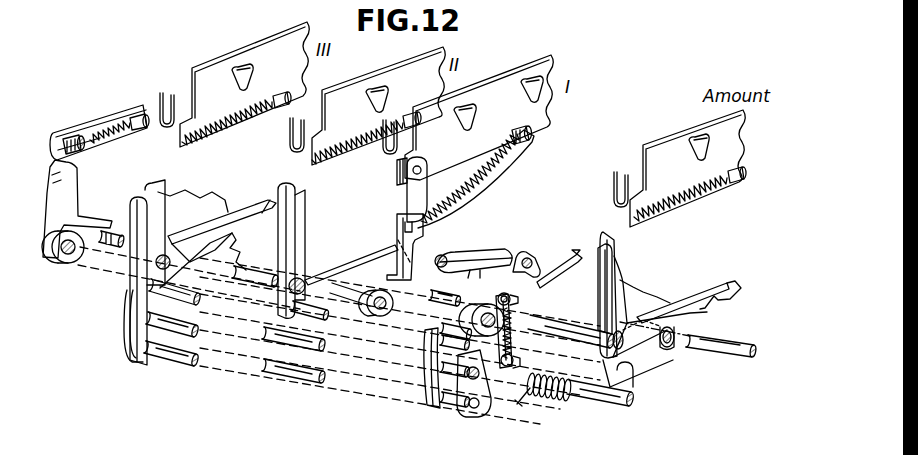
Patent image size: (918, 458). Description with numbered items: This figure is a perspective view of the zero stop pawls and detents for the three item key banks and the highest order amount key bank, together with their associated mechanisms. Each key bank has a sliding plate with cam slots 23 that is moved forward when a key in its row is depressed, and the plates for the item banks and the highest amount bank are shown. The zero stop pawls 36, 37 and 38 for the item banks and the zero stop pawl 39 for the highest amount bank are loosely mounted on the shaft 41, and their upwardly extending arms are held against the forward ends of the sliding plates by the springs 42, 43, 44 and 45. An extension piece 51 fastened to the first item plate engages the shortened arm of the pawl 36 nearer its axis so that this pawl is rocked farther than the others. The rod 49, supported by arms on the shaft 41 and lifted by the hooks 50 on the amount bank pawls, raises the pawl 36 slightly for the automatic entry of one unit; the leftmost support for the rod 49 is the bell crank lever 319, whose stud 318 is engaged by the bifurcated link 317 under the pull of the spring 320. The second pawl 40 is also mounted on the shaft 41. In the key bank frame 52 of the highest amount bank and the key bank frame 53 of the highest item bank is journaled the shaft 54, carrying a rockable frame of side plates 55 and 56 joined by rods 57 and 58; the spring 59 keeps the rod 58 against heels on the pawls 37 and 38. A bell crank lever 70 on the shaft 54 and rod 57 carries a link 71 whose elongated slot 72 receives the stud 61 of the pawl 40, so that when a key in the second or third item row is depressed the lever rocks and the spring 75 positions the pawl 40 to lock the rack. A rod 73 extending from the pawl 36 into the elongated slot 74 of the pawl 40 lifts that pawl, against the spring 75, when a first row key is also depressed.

The cam slots 23 is at (240, 70).
The link 317 is at (130, 106).
The stud 318 is at (63, 146).
The bell crank lever 319 is at (50, 196).
The spring 320 is at (95, 118).
The spring 42 is at (240, 118).
The spring 43 is at (340, 157).
The spring 44 is at (518, 148).
The spring 45 is at (678, 200).
The extension piece 51 is at (495, 188).
The key bank frame 53 is at (130, 210).
The zero stop pawl 38 is at (243, 217).
The shaft 41 is at (68, 263).
The rod 49 is at (112, 250).
The side plate 55 is at (128, 338).
The rod 57 is at (170, 360).
The shaft 54 is at (268, 345).
The rod 58 is at (302, 345).
The zero stop pawl 37 is at (356, 252).
The zero stop pawl 36 is at (492, 232).
The rod 73 is at (452, 256).
The elongated slot 74 is at (533, 240).
The second pawl 40 is at (570, 242).
The stud 61 is at (499, 297).
The elongated slot 72 is at (512, 299).
The spring 75 is at (516, 353).
The side plate 56 is at (437, 386).
The bell crank lever 70 is at (462, 407).
The link 71 is at (490, 380).
The spring 59 is at (540, 400).
The key bank frame 52 is at (634, 290).
The zero stop pawl 39 is at (725, 290).
The hooks 50 is at (670, 350).